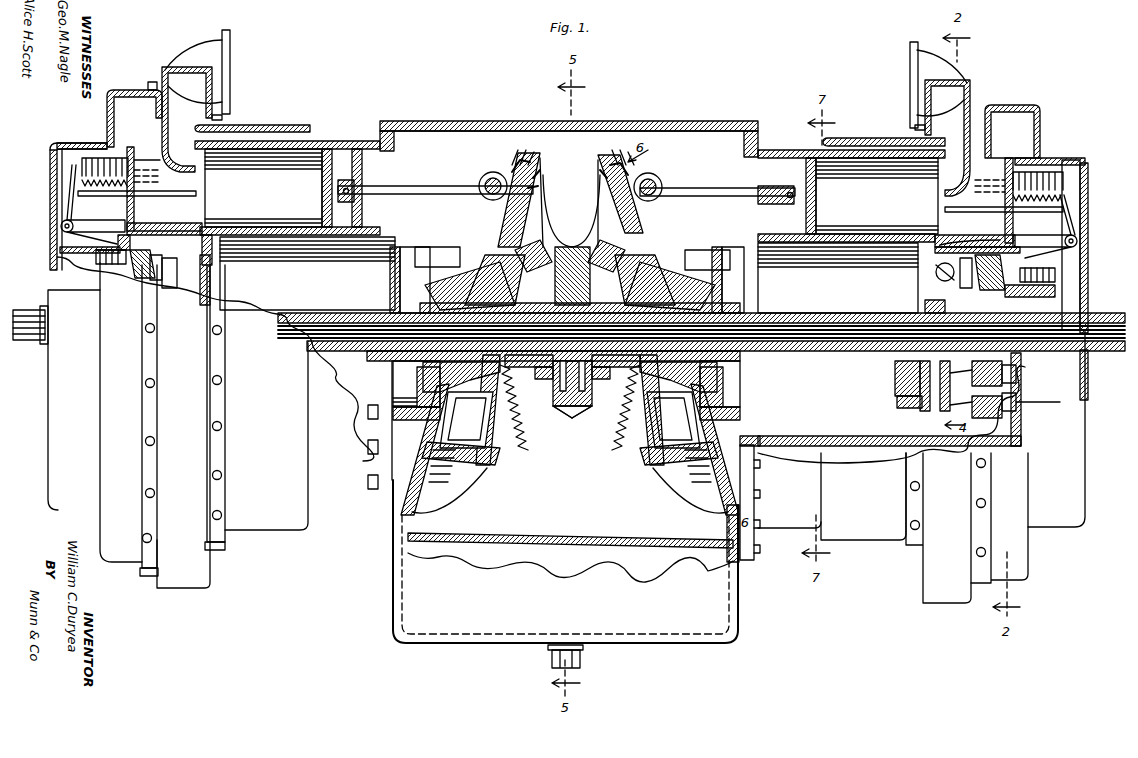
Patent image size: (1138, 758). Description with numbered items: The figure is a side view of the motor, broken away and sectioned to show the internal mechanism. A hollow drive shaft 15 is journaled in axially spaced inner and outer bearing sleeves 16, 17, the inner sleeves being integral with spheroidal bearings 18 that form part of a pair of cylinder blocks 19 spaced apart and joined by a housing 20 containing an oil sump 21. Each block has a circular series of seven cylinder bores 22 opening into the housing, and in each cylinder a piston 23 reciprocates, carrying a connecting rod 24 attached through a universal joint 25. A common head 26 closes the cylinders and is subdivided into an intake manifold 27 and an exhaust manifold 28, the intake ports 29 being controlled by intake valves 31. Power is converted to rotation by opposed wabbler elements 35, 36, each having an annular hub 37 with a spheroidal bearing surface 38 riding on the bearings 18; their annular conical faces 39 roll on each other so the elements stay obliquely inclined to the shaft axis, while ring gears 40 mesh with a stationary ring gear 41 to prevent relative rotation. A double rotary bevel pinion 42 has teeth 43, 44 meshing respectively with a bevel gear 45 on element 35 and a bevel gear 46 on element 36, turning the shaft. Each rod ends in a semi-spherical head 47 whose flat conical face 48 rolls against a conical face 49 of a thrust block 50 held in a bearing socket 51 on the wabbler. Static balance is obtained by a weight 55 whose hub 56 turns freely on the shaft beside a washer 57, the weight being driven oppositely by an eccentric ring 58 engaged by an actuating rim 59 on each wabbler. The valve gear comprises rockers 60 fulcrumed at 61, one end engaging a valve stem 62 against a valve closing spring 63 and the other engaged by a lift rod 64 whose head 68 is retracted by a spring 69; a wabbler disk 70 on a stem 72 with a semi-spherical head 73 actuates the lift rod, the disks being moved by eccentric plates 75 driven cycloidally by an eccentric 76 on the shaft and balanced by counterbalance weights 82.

The motor drive shaft 15 is at (845, 353).
The inner bearing sleeves 16 is at (378, 350).
The outer bearing sleeves 17 is at (1088, 375).
The spheroidal bearings 18 is at (422, 298).
The cylinder blocks 19 is at (316, 531).
The housing 20 is at (503, 124).
The oil sump 21 is at (682, 563).
The cylinder bores 22 is at (318, 143).
The piston 23 is at (352, 141).
The piston or connecting rod 24 is at (432, 190).
The universal joint 25 is at (566, 199).
The common head 26 is at (225, 127).
The intake manifold 27 is at (126, 104).
The exhaust manifold 28 is at (200, 108).
The intake ports 29 is at (175, 212).
The intake valves 31 is at (198, 193).
The wabbler element 35 is at (518, 240).
The wabbler element 36 is at (645, 240).
The annular hub 37 is at (475, 410).
The spheroidal bearing surface 38 is at (566, 390).
The annular conical faces 39 is at (572, 244).
The ring gears 40 is at (482, 268).
The ring gear 41 is at (430, 250).
The double rotary bevel pinion 42 is at (578, 380).
The teeth 43 is at (552, 415).
The teeth 44 is at (580, 409).
The bevel gear 45 is at (505, 455).
The bevel gear 46 is at (630, 440).
The semi-spherical head 47 is at (491, 172).
The flat conical face 48 is at (517, 168).
The conical face 49 is at (540, 176).
The thrust block 50 is at (538, 186).
The bearing socket 51 is at (506, 175).
The weight 55 is at (570, 248).
The hub 56 is at (570, 382).
The washer 57 is at (572, 368).
The eccentric ring 58 is at (512, 426).
The eccentric ring actuating rim 59 is at (656, 420).
The rockers 60 is at (70, 208).
The fulcrum 61 is at (60, 227).
The valve stem 62 is at (173, 190).
The valve closing spring 63 is at (95, 197).
The lift rod 64 is at (92, 265).
The head 68 is at (140, 280).
The spring 69 is at (1035, 298).
The wabbler disk 70 is at (168, 285).
The stem 72 is at (975, 417).
The semi-spherical head 73 is at (938, 275).
The eccentric plates 75 is at (212, 272).
The eccentric 76 is at (922, 310).
The counterbalance weights 82 is at (900, 403).